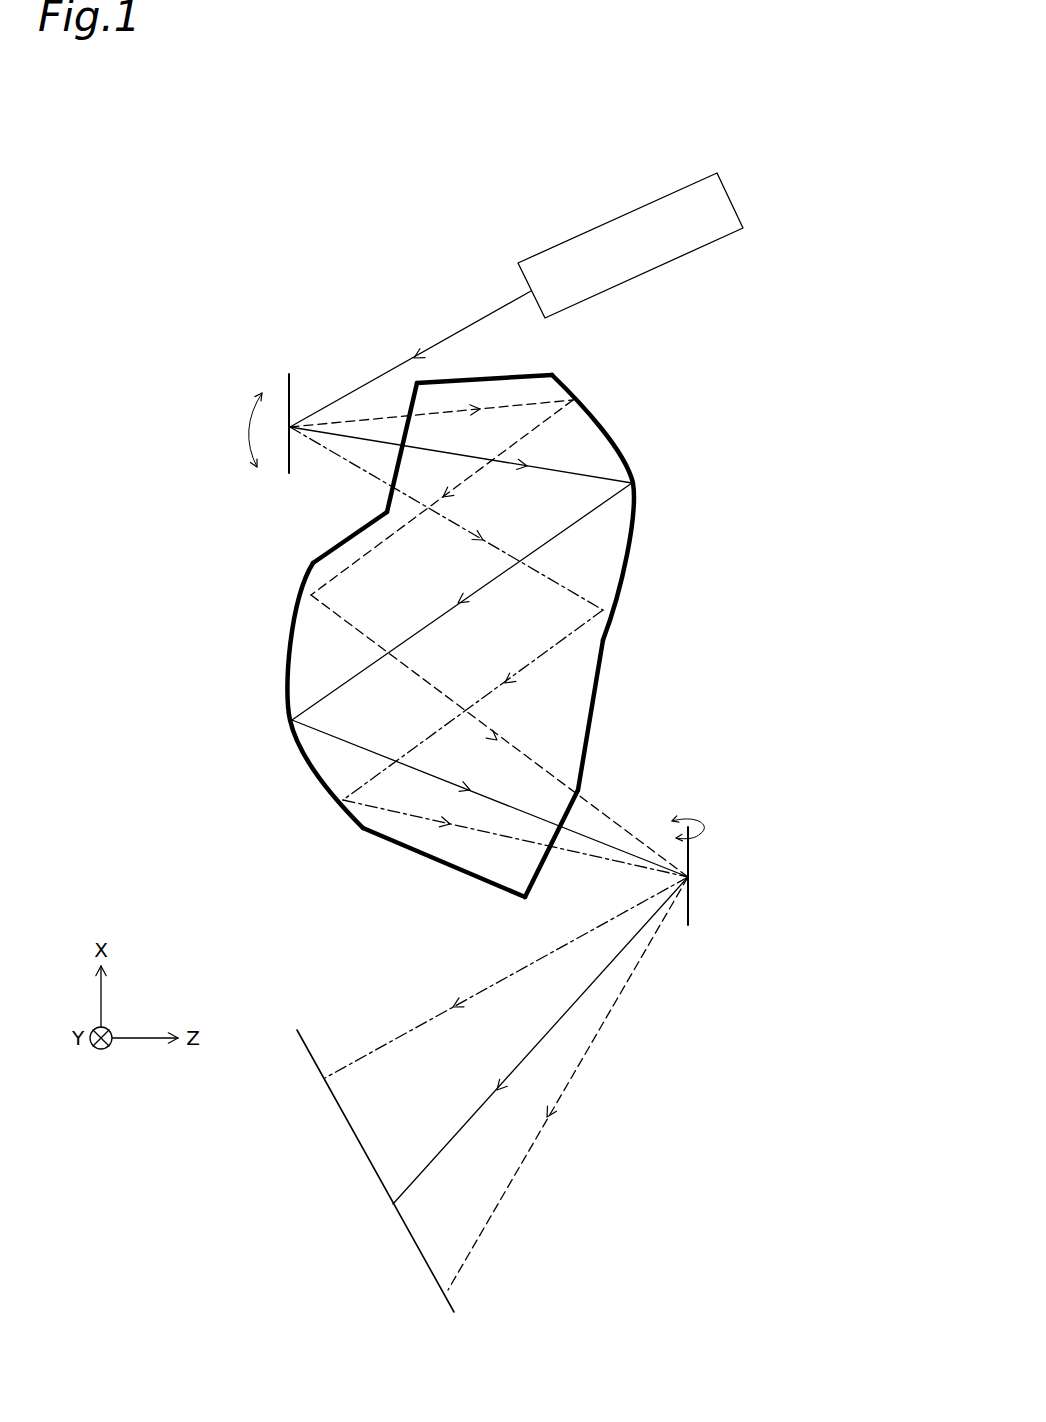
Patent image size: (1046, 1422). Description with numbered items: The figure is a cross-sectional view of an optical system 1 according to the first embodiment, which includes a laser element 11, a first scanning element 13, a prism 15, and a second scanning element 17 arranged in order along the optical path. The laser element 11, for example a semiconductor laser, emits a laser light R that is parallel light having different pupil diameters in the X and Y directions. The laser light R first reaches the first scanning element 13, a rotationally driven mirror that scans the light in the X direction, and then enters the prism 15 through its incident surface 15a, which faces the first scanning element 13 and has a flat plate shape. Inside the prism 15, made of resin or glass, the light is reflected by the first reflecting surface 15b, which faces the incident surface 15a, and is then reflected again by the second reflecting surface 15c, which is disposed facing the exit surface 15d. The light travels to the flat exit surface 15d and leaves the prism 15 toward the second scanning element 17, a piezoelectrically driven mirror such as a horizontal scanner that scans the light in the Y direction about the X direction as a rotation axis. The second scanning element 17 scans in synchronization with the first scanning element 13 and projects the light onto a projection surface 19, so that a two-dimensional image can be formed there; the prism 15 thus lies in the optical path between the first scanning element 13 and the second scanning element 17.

The optical system 1 is at (787, 124).
The laser element 11 is at (733, 200).
The laser light R is at (470, 322).
The first scanning element 13 is at (288, 384).
The prism 15 is at (658, 415).
The incident surface 15a is at (385, 505).
The first reflecting surface 15b is at (637, 512).
The second reflecting surface 15c is at (287, 662).
The exit surface 15d is at (539, 872).
The second scanning element 17 is at (694, 843).
The projection surface 19 is at (356, 1141).